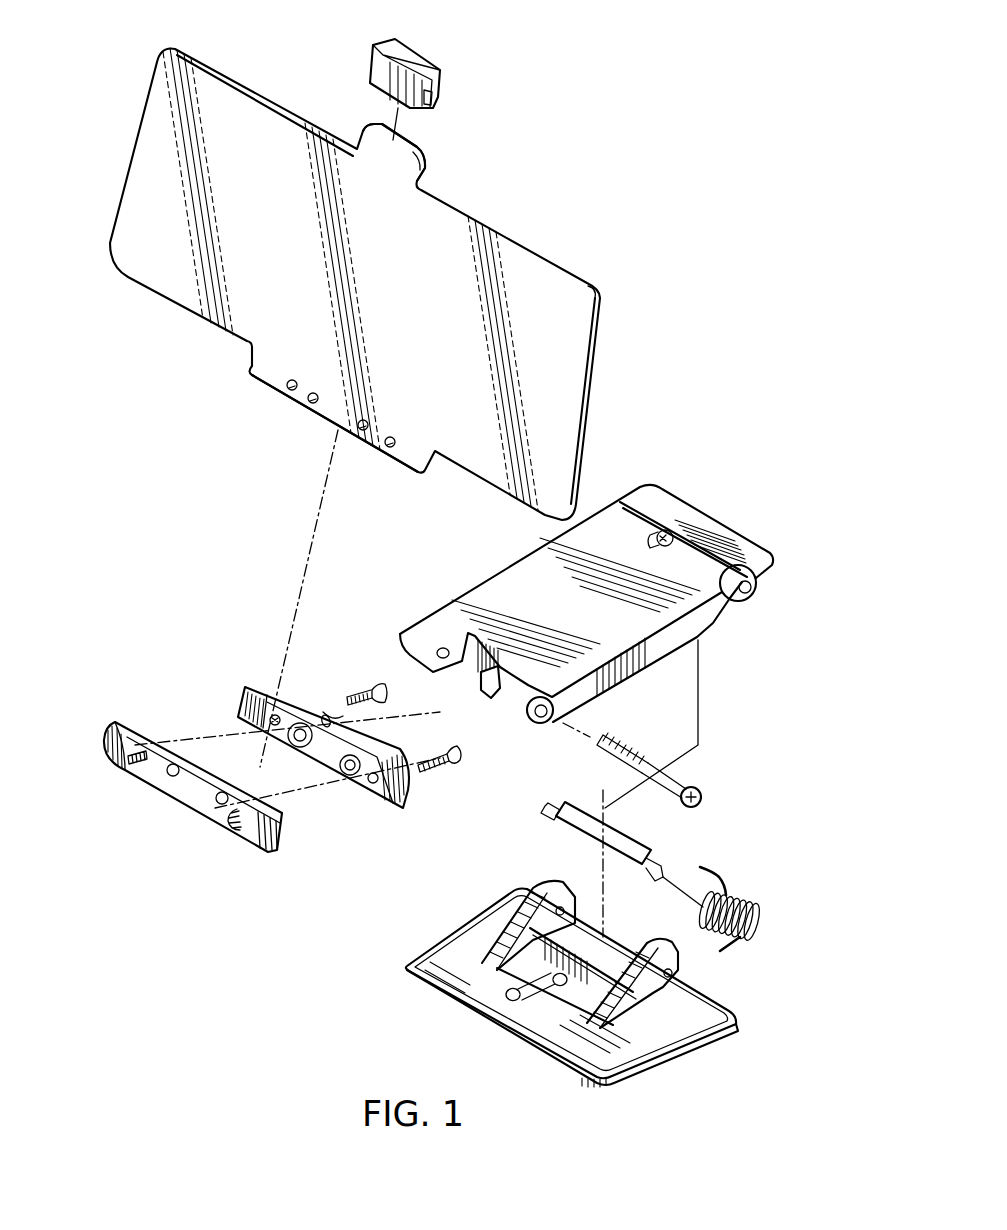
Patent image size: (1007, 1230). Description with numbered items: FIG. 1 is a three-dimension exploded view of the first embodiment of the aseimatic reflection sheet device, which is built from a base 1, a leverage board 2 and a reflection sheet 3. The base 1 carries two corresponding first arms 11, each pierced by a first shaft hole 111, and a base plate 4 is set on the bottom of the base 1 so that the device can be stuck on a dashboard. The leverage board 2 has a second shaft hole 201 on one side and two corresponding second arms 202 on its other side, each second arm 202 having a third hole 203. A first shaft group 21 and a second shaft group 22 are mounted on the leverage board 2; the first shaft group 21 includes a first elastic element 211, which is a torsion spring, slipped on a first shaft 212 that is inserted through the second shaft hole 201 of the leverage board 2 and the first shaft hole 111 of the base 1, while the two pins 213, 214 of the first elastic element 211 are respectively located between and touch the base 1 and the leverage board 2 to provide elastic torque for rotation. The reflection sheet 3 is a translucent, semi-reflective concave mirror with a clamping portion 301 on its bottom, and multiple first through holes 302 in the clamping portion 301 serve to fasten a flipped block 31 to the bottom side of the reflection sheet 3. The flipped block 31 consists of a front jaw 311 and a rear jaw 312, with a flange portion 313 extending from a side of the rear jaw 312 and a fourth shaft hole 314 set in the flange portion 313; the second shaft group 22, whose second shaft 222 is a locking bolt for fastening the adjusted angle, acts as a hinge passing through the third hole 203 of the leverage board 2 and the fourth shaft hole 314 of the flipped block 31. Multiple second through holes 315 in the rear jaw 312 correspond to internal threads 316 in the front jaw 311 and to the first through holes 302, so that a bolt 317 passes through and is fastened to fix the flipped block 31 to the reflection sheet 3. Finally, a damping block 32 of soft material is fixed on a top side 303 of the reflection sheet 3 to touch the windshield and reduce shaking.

The base 1 is at (560, 984).
The leverage board 2 is at (690, 520).
The reflection sheet 3 is at (600, 280).
The base plate 4 is at (458, 945).
The first arm 11 is at (677, 970).
The first shaft group 21 is at (679, 881).
The second shaft group 22 is at (676, 741).
The flipped block 31 is at (292, 755).
The damping block 32 is at (443, 70).
The first shaft hole 111 is at (668, 977).
The second shaft hole 201 is at (748, 597).
The second arm 202 is at (512, 722).
The third hole 203 is at (550, 718).
The first elastic element 211 is at (740, 890).
The first shaft 212 is at (735, 803).
The pin 213 is at (730, 953).
The pin 214 is at (705, 863).
The second shaft 222 is at (623, 763).
The clamping portion 301 is at (243, 370).
The first through hole 302 is at (288, 380).
The top side 303 is at (427, 150).
The front jaw 311 is at (193, 790).
The rear jaw 312 is at (337, 749).
The flange portion 313 is at (349, 702).
The fourth shaft hole 314 is at (400, 762).
The second through hole 315 is at (365, 778).
The internal thread 316 is at (250, 832).
The bolt 317 is at (443, 767).